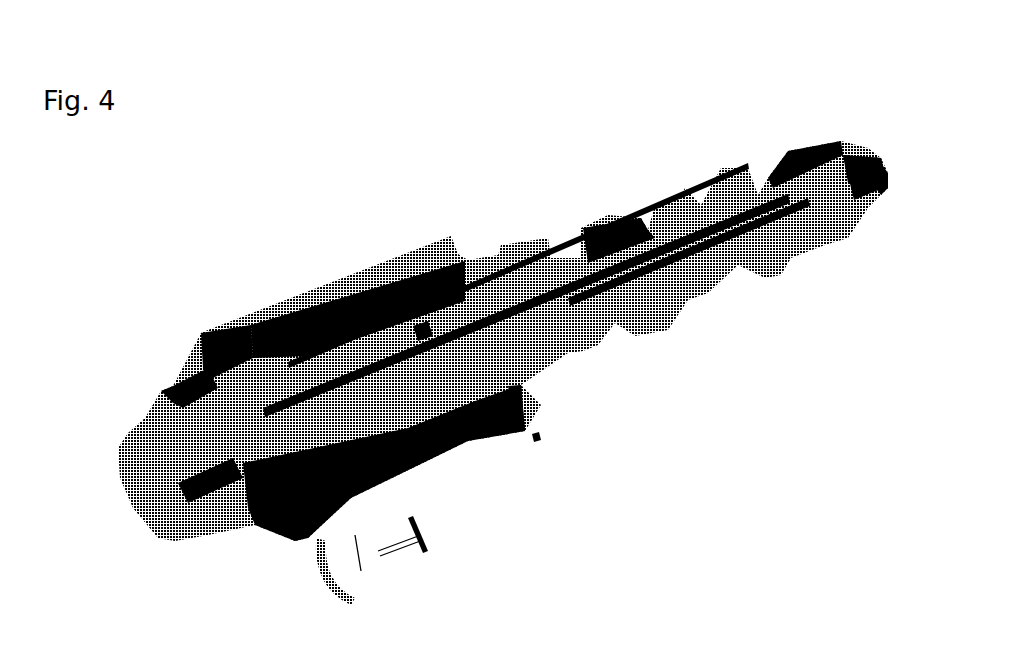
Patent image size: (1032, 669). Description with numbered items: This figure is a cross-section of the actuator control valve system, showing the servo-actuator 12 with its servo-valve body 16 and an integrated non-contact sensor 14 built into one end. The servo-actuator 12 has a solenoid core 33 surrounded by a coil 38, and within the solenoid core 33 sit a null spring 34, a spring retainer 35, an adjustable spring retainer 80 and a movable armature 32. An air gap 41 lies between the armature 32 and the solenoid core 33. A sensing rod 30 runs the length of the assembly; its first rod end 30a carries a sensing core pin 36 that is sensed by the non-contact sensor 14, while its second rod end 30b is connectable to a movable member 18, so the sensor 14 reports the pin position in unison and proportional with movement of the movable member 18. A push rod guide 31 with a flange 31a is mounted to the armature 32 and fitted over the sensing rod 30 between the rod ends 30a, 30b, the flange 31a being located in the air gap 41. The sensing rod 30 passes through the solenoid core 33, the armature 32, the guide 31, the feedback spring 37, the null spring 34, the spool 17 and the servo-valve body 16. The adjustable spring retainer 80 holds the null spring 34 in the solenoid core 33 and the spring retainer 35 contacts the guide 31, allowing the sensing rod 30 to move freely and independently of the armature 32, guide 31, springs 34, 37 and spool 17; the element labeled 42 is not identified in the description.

The servo-actuator 12 is at (473, 500).
The non-contact sensor 14 is at (197, 432).
The servo-valve body 16 is at (680, 293).
The spool 17 is at (697, 207).
The movable member 18 is at (870, 150).
The sensing rod 30 is at (727, 223).
The first rod end 30a is at (303, 403).
The second rod end 30b is at (853, 157).
The push rod guide 31 is at (413, 363).
The flange 31a is at (437, 360).
The movable armature 32 is at (482, 358).
The solenoid core 33 is at (312, 357).
The null spring 34 is at (257, 407).
The spring retainer 35 is at (373, 393).
The sensing core pin 36 is at (217, 447).
The feedback spring 37 is at (783, 183).
The coil 38 is at (343, 305).
The air gap 41 is at (413, 323).
The fastener 42 is at (533, 430).
The adjustable spring retainer 80 is at (243, 460).